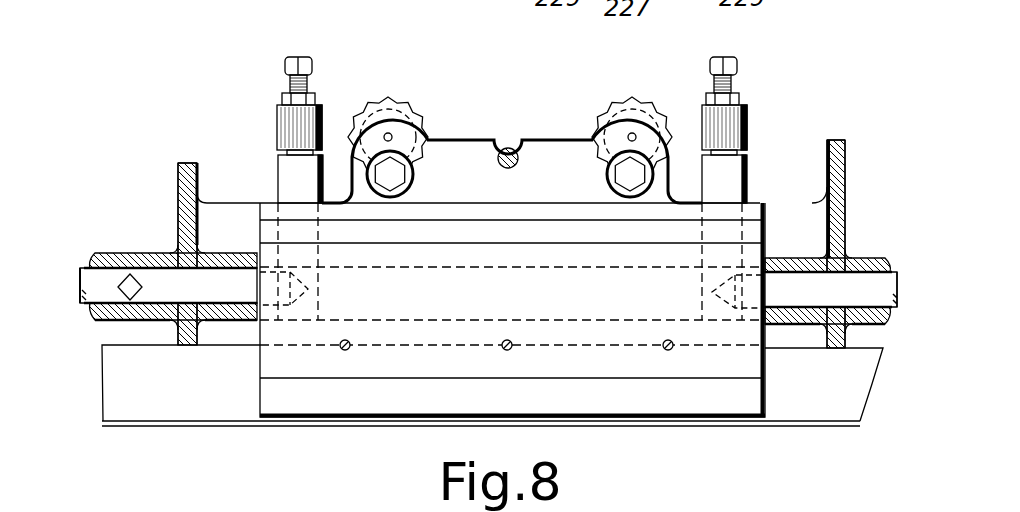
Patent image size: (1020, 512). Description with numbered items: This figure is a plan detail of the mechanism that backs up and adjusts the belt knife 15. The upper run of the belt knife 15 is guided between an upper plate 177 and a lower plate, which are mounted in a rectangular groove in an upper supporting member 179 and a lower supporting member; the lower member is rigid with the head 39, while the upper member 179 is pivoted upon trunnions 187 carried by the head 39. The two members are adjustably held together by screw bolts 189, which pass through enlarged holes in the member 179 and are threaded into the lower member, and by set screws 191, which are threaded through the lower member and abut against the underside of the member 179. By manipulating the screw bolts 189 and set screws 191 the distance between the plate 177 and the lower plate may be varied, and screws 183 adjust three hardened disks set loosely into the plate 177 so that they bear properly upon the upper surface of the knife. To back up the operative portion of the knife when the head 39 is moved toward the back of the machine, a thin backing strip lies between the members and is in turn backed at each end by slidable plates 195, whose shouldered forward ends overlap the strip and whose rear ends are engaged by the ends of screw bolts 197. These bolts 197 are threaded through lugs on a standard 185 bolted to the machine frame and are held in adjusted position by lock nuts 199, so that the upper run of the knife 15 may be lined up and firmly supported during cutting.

The belt knife 15 is at (803, 408).
The head 39 is at (846, 165).
The upper plate 177 is at (633, 405).
The upper supporting member 179 is at (470, 153).
The screws 183 is at (347, 350).
The standard 185 is at (732, 130).
The trunnions 187 is at (850, 290).
The screw bolts 189 is at (614, 163).
The set screws 191 is at (636, 102).
The slidable plates 195 is at (733, 170).
The screw bolts 197 is at (732, 63).
The lock nuts 199 is at (735, 102).